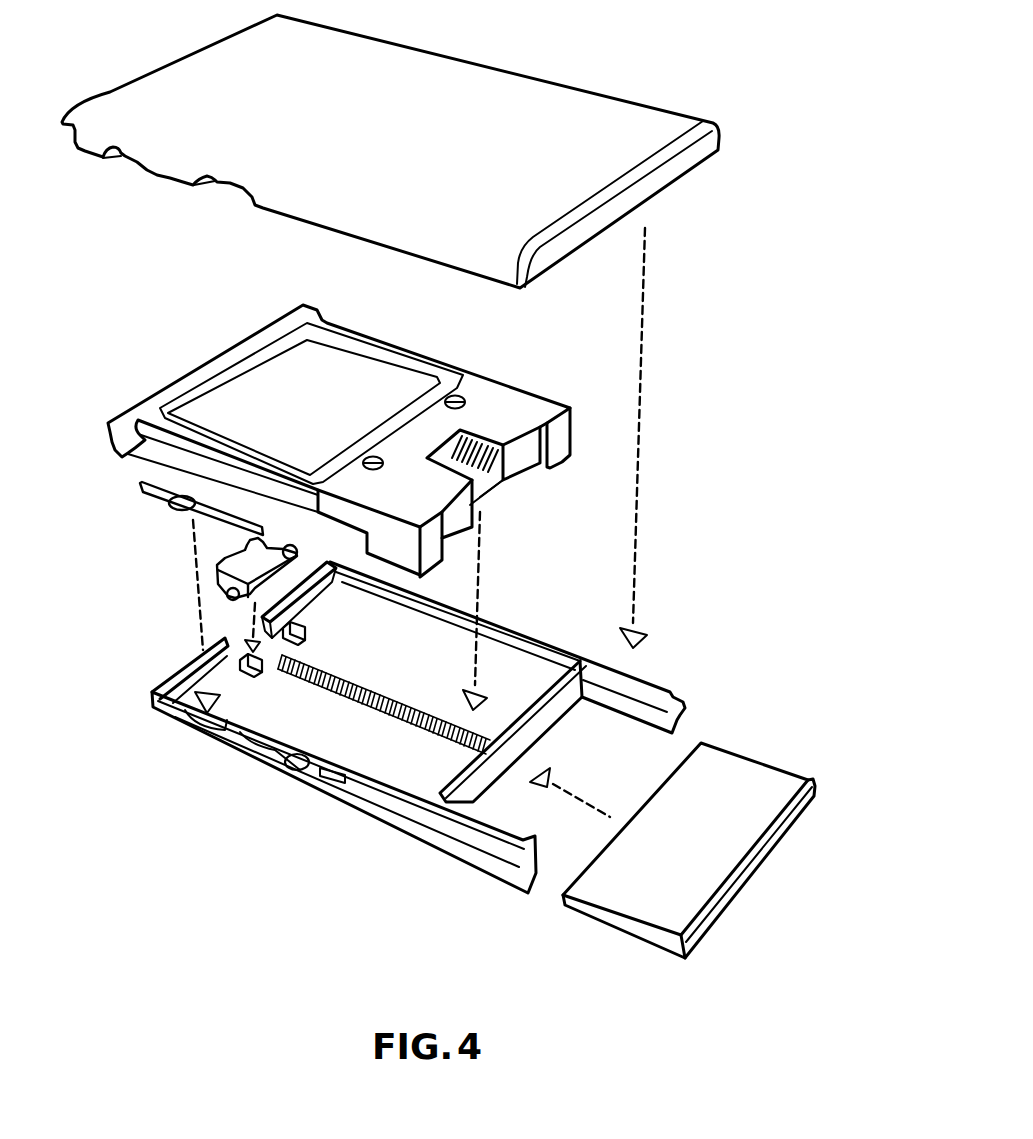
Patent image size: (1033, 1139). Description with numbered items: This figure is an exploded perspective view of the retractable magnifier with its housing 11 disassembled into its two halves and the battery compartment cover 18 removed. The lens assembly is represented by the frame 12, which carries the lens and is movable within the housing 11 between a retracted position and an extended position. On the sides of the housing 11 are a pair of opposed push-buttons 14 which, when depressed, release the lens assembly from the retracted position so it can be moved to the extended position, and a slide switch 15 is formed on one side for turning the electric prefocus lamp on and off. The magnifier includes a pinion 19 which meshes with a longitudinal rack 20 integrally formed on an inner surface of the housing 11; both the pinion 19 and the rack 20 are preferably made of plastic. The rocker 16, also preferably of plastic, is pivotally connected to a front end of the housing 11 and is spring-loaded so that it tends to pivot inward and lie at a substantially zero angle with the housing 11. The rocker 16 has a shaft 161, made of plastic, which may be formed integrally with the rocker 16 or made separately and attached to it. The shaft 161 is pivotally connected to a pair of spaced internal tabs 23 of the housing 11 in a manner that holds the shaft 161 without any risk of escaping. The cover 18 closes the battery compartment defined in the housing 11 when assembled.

The housing 11 is at (575, 108).
The frame 12 is at (502, 403).
The push-buttons 14 is at (173, 507).
The slide switch 15 is at (300, 775).
The rocker 16 is at (265, 555).
The shaft 161 is at (225, 595).
The cover 18 is at (746, 780).
The pinion 19 is at (497, 497).
The rack 20 is at (393, 694).
The internal tabs 23 is at (305, 622).